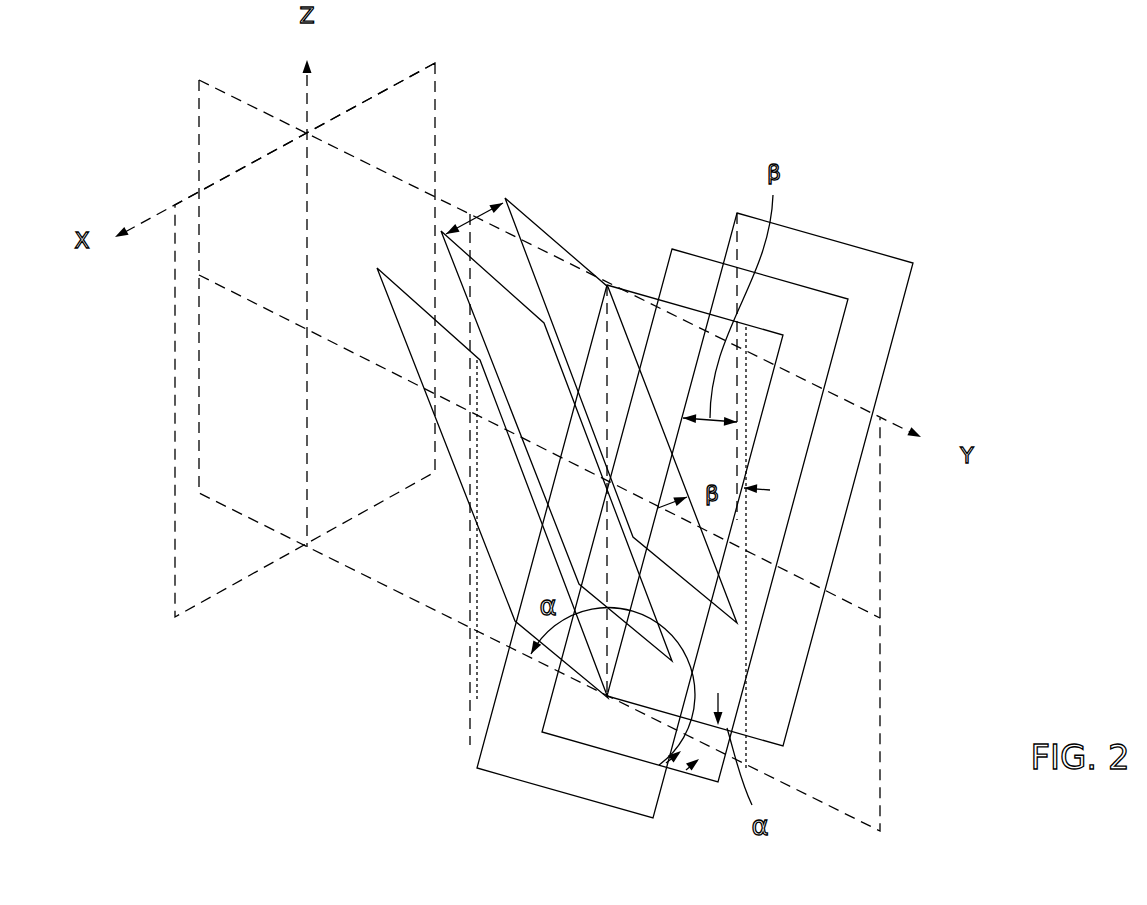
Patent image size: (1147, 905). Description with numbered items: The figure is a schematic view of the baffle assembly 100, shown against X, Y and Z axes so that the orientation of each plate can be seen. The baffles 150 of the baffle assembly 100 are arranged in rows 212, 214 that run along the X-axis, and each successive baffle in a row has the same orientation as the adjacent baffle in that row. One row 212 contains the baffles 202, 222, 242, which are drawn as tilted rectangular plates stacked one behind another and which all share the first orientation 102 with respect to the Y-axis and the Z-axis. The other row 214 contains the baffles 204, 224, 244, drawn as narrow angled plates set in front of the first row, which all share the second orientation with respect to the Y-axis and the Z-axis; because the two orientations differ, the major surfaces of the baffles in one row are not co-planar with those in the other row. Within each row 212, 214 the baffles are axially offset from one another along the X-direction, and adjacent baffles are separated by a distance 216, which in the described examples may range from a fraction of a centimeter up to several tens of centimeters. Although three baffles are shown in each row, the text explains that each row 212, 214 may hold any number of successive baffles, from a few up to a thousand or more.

The baffle assembly 100 is at (915, 87).
The first orientation 102 is at (640, 818).
The baffles 150 is at (490, 777).
The baffle 202 is at (490, 587).
The baffle 204 is at (408, 343).
The row 212 is at (866, 236).
The row 214 is at (590, 249).
The distance 216 is at (484, 218).
The baffle 222 is at (810, 323).
The baffle 224 is at (455, 285).
The baffle 242 is at (873, 287).
The baffle 244 is at (530, 231).